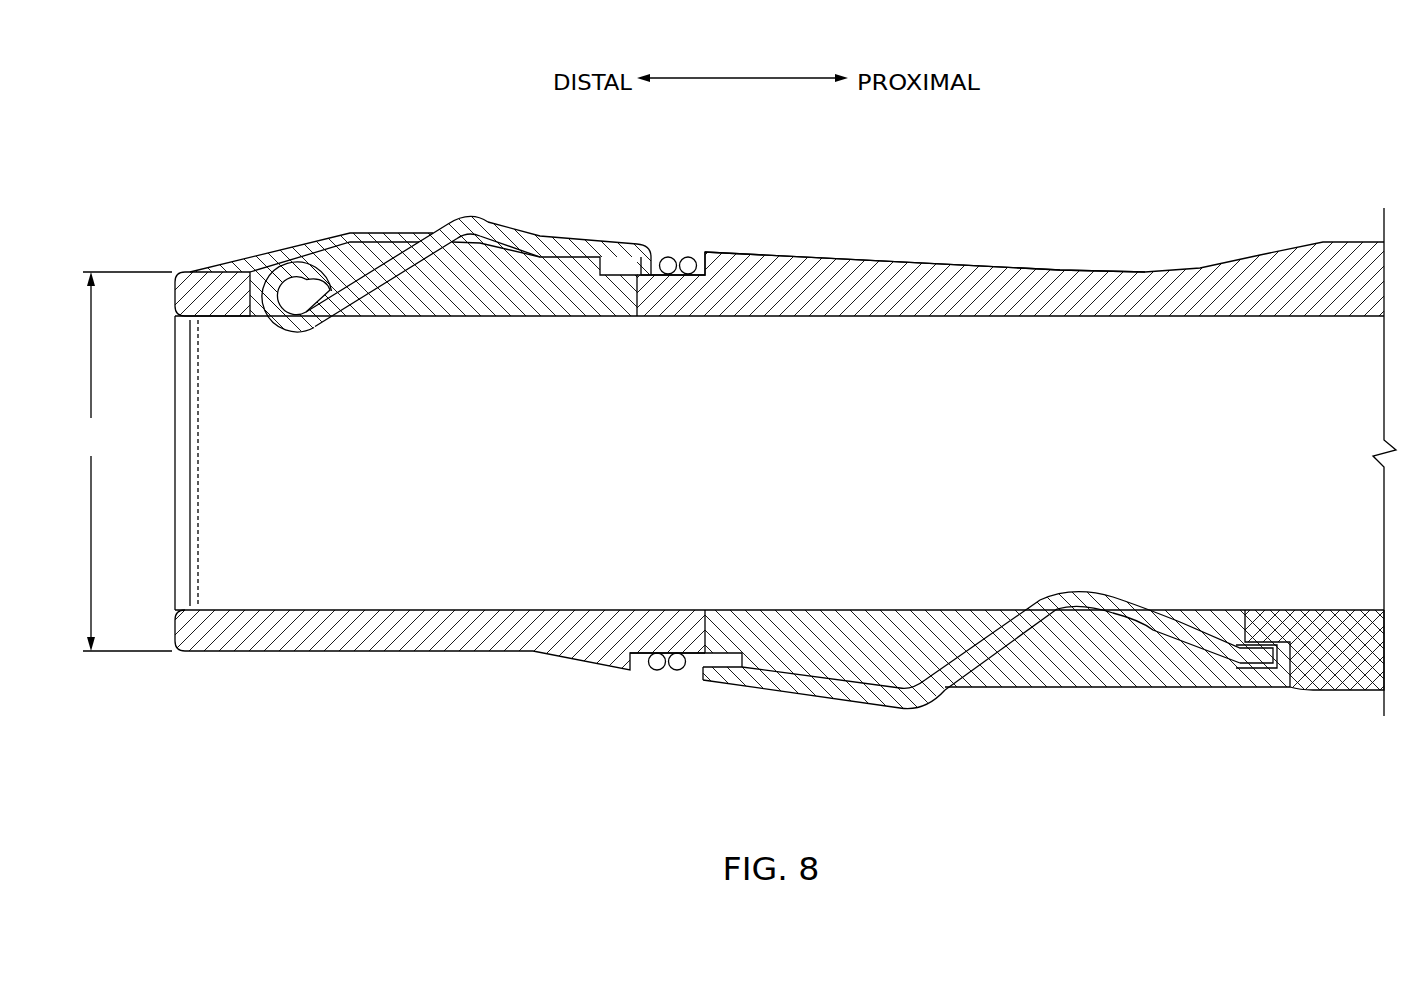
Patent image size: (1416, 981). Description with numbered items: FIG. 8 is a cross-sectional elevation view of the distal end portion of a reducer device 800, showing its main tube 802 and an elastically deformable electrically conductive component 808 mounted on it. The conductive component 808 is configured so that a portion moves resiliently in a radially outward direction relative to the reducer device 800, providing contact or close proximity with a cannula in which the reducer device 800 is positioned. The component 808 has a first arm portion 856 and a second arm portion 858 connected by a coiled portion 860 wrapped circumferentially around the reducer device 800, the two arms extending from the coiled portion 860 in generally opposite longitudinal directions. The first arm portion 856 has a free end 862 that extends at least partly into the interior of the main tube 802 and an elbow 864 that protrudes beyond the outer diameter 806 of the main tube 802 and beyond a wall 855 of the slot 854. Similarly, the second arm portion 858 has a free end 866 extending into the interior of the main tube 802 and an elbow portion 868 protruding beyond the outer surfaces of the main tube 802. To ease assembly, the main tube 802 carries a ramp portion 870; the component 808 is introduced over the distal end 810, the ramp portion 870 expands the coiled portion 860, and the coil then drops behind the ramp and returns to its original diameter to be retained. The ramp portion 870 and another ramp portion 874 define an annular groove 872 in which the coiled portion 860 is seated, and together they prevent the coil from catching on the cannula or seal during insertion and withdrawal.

The reducer device 800 is at (1242, 146).
The main tube 802 is at (1058, 275).
The outer diameter 806 is at (120, 461).
The elastically deformable electrically conductive component 808 is at (668, 200).
The distal end 810 is at (173, 638).
The slot 854 is at (355, 247).
The wall 855 is at (392, 235).
The first arm portion 856 is at (575, 250).
The second arm portion 858 is at (753, 673).
The coiled portion 860 is at (660, 672).
The free end 862 is at (282, 275).
The elbow 864 is at (470, 222).
The free end 866 is at (1137, 615).
The elbow portion 868 is at (877, 707).
The ramp portion 870 is at (583, 662).
The annular groove 872 is at (698, 256).
The ramp portion 874 is at (848, 258).